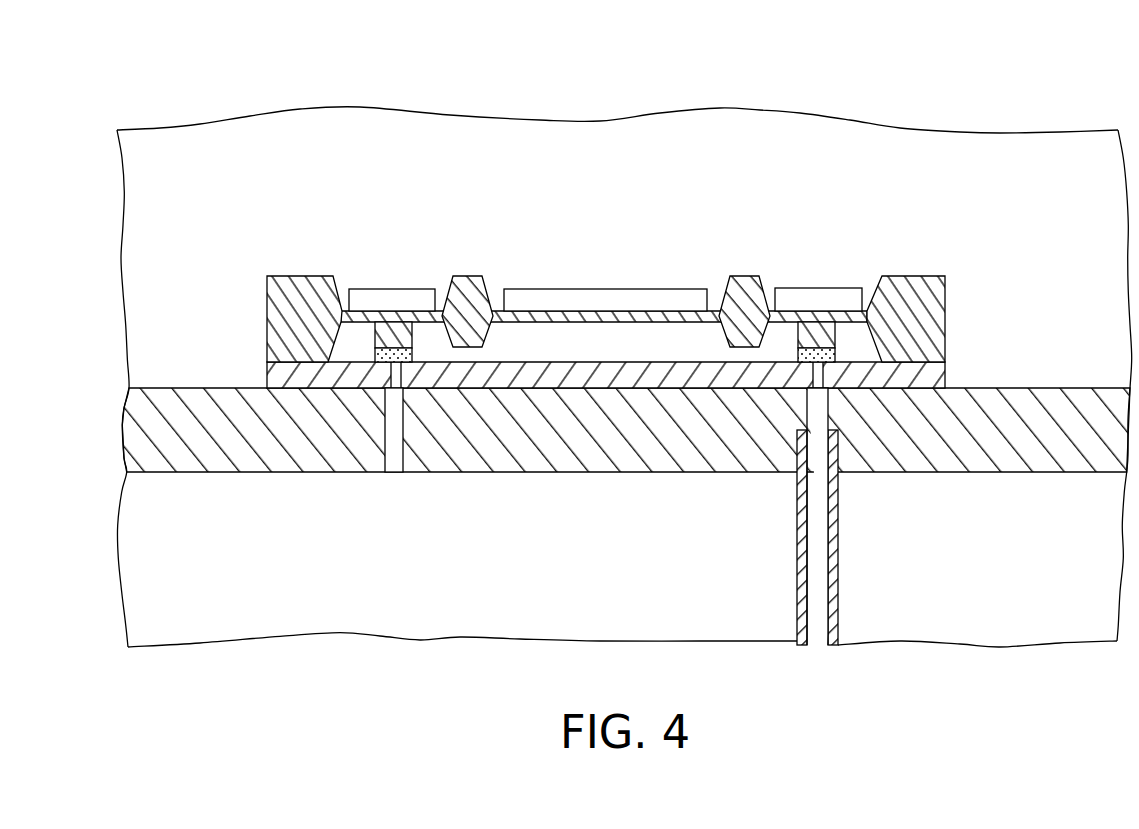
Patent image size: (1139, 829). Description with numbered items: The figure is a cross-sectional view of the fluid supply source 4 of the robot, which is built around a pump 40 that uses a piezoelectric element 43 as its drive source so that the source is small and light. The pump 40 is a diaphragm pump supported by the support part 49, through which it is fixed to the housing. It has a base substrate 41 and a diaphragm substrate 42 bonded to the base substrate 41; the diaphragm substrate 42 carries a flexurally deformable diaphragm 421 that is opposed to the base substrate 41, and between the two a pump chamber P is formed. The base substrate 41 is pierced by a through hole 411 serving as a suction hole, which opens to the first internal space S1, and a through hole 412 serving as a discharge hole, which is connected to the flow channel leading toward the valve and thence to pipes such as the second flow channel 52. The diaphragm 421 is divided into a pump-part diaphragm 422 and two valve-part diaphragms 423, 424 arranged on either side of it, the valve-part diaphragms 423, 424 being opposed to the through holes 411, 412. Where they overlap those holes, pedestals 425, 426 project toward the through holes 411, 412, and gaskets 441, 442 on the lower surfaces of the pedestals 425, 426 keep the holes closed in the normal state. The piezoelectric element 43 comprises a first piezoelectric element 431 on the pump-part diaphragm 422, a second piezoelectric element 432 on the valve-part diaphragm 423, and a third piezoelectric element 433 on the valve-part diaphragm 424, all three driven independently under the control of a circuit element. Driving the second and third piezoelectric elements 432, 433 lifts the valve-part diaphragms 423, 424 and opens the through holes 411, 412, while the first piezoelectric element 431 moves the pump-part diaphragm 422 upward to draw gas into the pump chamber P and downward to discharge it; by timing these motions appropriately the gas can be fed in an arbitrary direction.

The first internal space S1 is at (228, 150).
The fluid supply source 4 is at (608, 263).
The pump 40 is at (608, 263).
The base substrate 41 is at (583, 376).
The through hole 411 is at (818, 378).
The through hole 412 is at (395, 380).
The diaphragm substrate 42 is at (468, 288).
The diaphragm 421 is at (608, 275).
The pump-part diaphragm 422 is at (640, 311).
The valve-part diaphragm 423 is at (780, 311).
The valve-part diaphragm 424 is at (378, 322).
The pedestal 425 is at (835, 339).
The pedestal 426 is at (400, 338).
The piezoelectric element 43 is at (619, 265).
The first piezoelectric element 431 is at (548, 300).
The second piezoelectric element 432 is at (823, 300).
The third piezoelectric element 433 is at (398, 290).
The gasket 441 is at (800, 354).
The gasket 442 is at (388, 361).
The support part 49 is at (1027, 415).
The second flow channel 52 is at (800, 555).
The pump chamber P is at (520, 348).